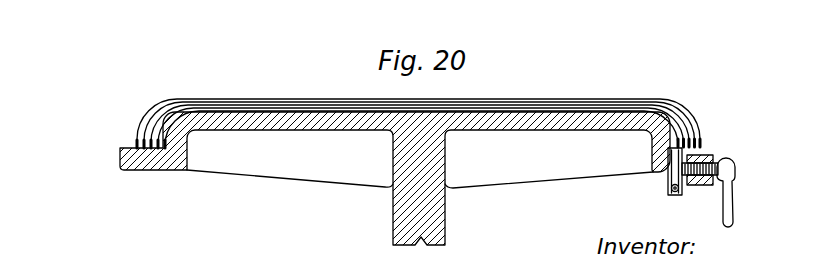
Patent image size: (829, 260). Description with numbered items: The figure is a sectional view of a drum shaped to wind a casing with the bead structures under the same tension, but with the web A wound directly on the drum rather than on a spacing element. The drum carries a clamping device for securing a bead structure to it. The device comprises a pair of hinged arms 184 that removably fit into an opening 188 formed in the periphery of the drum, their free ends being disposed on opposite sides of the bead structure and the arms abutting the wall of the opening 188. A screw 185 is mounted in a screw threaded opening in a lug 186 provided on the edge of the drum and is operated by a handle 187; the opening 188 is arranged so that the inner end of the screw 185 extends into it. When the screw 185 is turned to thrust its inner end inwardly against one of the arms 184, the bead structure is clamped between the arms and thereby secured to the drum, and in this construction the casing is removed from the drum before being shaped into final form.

The web A is at (312, 99).
The hinged arms 184 is at (668, 182).
The screw 185 is at (703, 153).
The lug 186 is at (697, 187).
The handle 187 is at (732, 198).
The opening 188 is at (652, 163).